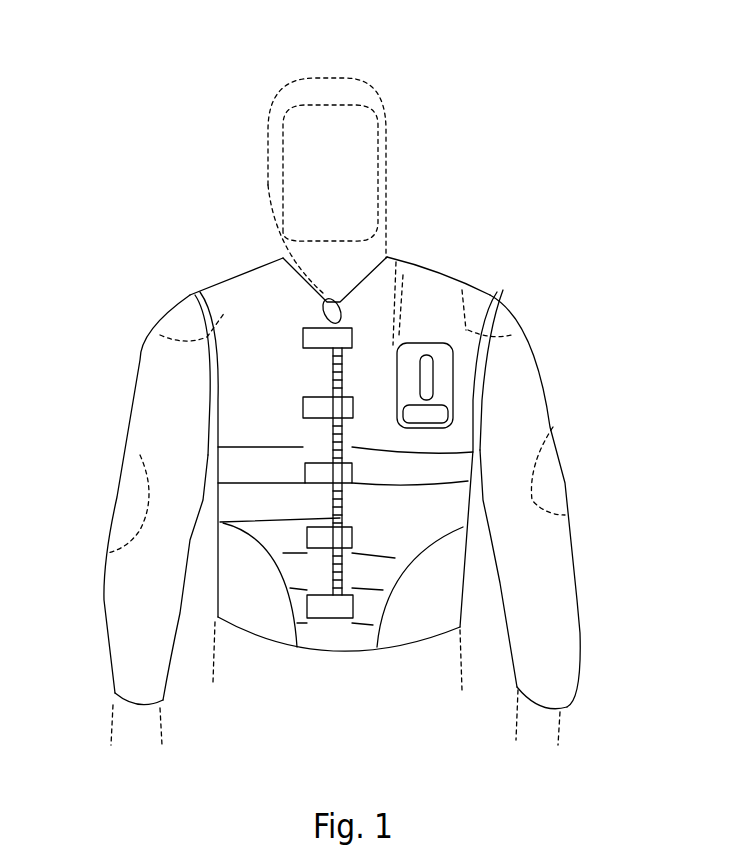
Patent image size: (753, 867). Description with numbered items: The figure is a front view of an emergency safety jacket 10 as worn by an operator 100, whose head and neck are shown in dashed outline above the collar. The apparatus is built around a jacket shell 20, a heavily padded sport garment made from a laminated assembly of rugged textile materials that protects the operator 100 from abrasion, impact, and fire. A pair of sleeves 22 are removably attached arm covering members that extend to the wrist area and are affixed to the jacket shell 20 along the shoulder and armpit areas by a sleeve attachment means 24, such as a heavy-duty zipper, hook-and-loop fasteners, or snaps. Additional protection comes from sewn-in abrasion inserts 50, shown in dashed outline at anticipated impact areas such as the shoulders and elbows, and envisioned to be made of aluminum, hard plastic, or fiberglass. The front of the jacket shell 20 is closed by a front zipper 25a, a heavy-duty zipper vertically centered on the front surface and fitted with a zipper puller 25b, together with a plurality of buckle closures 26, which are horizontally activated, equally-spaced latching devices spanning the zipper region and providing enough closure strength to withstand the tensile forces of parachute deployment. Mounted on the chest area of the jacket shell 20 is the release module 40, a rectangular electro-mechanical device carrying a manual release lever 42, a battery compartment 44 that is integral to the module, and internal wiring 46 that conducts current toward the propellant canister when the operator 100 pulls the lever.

The emergency safety jacket 10 is at (657, 138).
The operator 100 is at (380, 113).
The jacket shell 20 is at (270, 623).
The sleeves 22 is at (118, 490).
The sleeve attachment means 24 is at (207, 367).
The front zipper 25a is at (343, 446).
The zipper puller 25b is at (322, 296).
The buckle closures 26 is at (306, 465).
The release module 40 is at (405, 345).
The manual release lever 42 is at (428, 372).
The battery compartment 44 is at (442, 416).
The internal wiring 46 is at (398, 293).
The abrasion inserts 50 is at (173, 340).